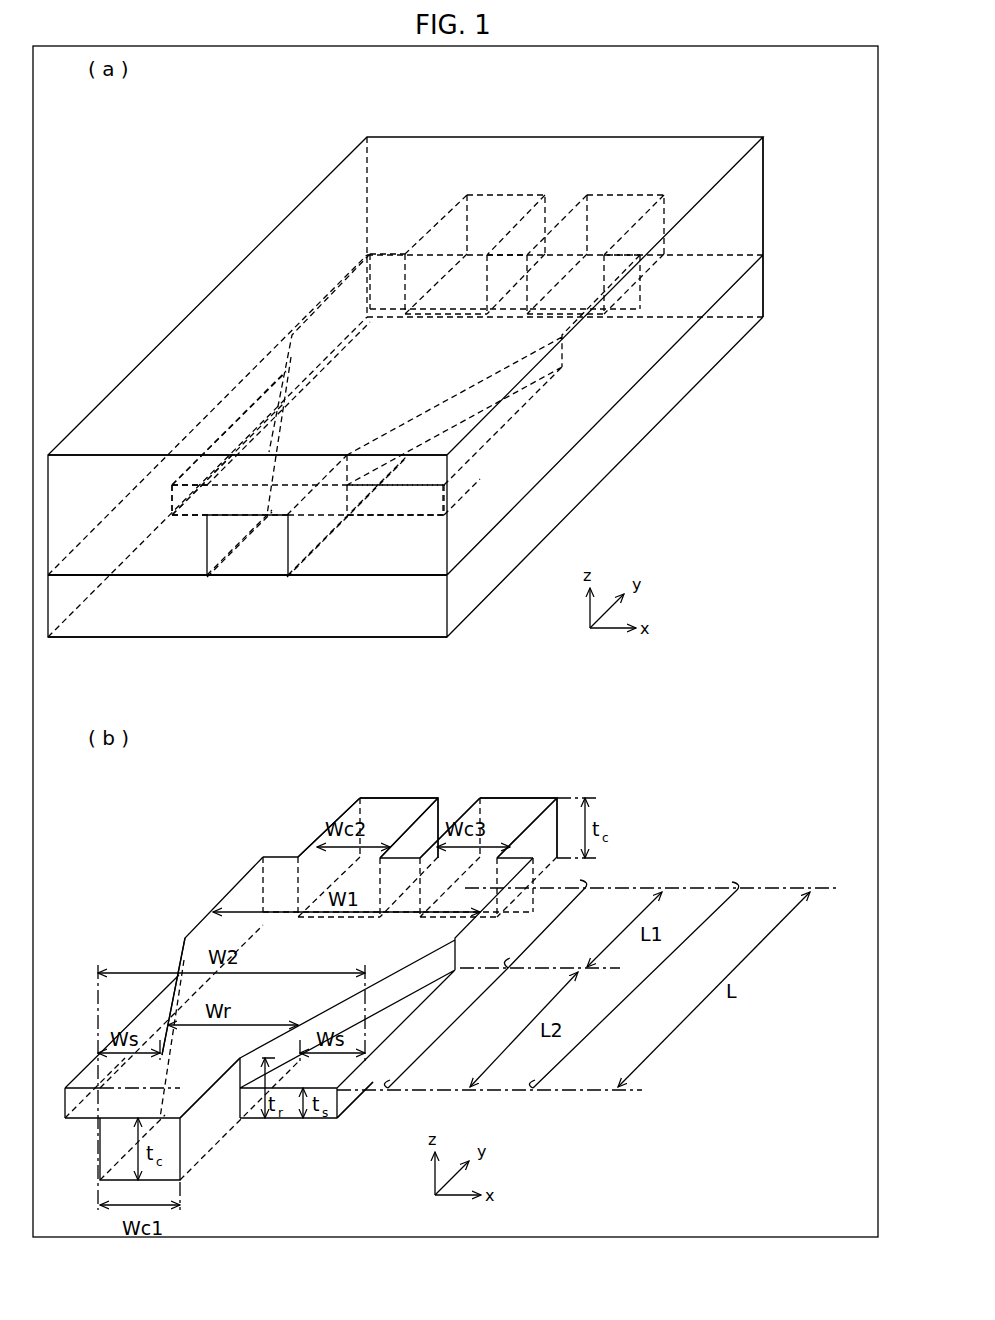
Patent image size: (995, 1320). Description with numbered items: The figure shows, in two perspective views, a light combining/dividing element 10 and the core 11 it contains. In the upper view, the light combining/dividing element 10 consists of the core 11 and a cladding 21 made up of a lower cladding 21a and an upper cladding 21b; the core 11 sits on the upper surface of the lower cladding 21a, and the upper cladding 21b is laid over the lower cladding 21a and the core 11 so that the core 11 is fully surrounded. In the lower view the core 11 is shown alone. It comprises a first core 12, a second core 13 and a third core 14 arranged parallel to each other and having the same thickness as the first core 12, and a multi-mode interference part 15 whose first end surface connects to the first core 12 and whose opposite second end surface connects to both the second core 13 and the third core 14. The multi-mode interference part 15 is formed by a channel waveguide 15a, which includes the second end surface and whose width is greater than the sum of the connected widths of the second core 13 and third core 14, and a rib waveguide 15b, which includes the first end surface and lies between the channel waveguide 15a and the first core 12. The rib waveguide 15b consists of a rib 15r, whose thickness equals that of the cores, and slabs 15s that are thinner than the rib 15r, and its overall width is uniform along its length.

The light combining/dividing element 10 is at (688, 118).
The core 11 is at (355, 547).
The first core 12 is at (205, 1138).
The second core 13 is at (400, 808).
The third core 14 is at (520, 808).
The multi-mode interference (MMI) part 15 is at (648, 988).
The channel waveguide 15a is at (553, 920).
The rib waveguide 15b is at (447, 1032).
The rib 15r is at (208, 1000).
The slabs 15s is at (345, 1100).
The cladding 21 is at (818, 180).
The lower cladding 21a is at (766, 291).
The upper cladding 21b is at (766, 201).